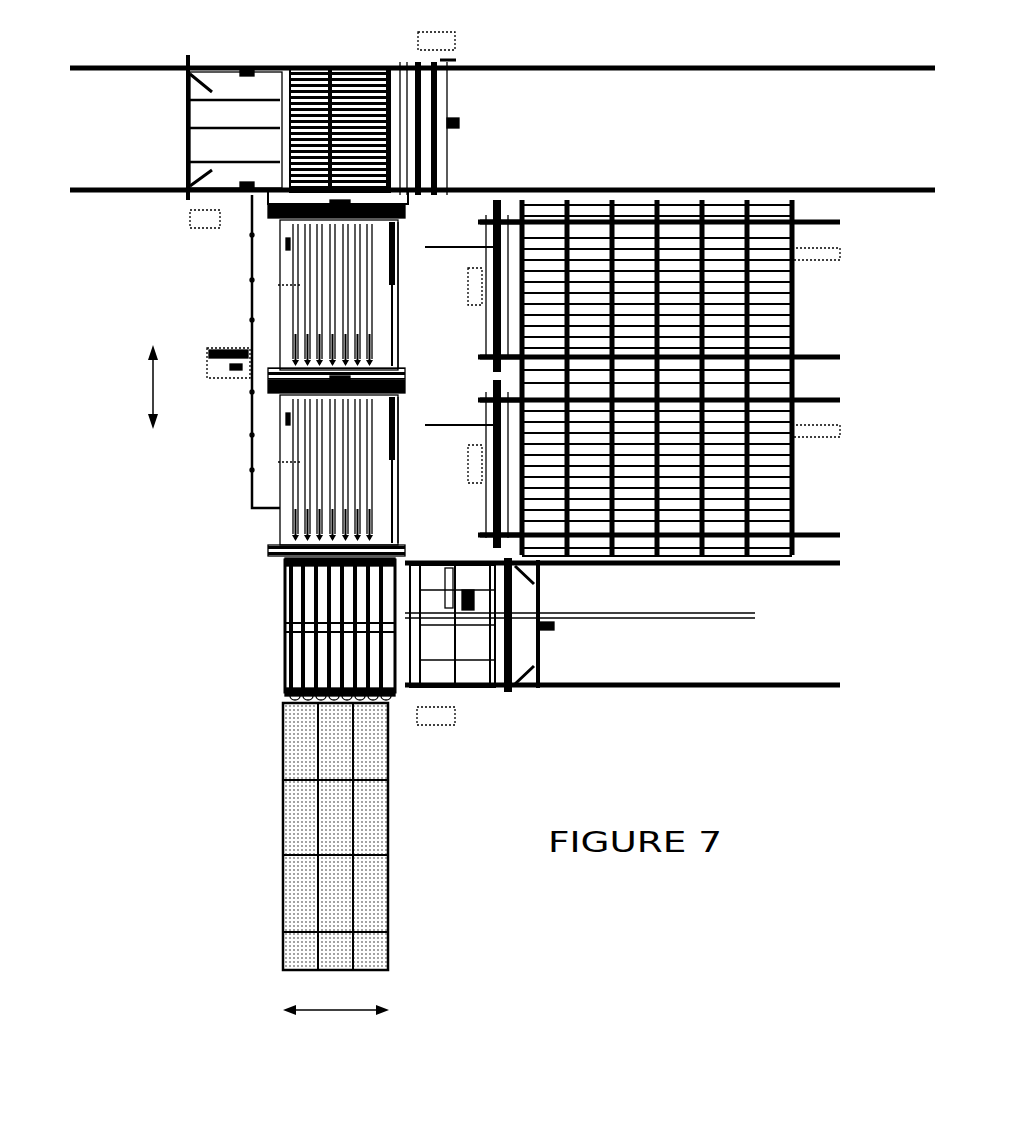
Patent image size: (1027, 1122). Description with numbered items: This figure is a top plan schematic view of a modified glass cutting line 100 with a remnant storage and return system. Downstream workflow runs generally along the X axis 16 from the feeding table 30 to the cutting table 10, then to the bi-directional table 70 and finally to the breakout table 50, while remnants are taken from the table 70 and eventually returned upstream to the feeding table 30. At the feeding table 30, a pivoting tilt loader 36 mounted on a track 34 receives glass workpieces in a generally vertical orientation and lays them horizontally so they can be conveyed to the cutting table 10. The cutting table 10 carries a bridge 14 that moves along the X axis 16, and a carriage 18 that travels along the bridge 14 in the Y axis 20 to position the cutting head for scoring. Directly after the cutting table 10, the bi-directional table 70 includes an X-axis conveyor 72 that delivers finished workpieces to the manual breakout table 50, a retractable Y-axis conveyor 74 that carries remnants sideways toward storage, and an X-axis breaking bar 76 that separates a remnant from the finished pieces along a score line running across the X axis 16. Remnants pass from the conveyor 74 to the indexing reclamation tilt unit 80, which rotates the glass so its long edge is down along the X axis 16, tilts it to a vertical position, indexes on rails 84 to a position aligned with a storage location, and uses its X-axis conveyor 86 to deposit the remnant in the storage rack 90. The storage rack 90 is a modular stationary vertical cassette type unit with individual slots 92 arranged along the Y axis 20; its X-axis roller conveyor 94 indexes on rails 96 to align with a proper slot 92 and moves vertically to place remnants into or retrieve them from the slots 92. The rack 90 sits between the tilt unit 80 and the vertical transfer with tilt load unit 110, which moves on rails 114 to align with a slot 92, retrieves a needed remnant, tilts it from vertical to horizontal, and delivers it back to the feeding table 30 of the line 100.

The cutting line 100 is at (116, 286).
The cutting table 10 is at (232, 285).
The bridge 14 is at (386, 236).
The X axis 16 is at (148, 392).
The carriage 18 is at (406, 210).
The Y axis 20 is at (336, 1012).
The feeding table 30 is at (406, 80).
The track 34 is at (135, 190).
The pivoting tilt loader 36 is at (332, 66).
The breakout table 50 is at (390, 914).
The bi-directional table 70 is at (284, 650).
The X-axis conveyor 72 is at (284, 580).
The retractable Y-axis conveyor 74 is at (284, 626).
The X-axis breaking bar 76 is at (398, 692).
The indexing reclamation tilt unit 80 is at (462, 666).
The rails 84 is at (665, 688).
The X-axis conveyor 86 is at (546, 642).
The storage rack 90 is at (790, 302).
The slots 92 is at (535, 200).
The X-axis roller conveyor 94 is at (490, 326).
The rails 96 is at (845, 224).
The vertical transfer with tilt load unit 110 is at (456, 106).
The rails 114 is at (800, 66).